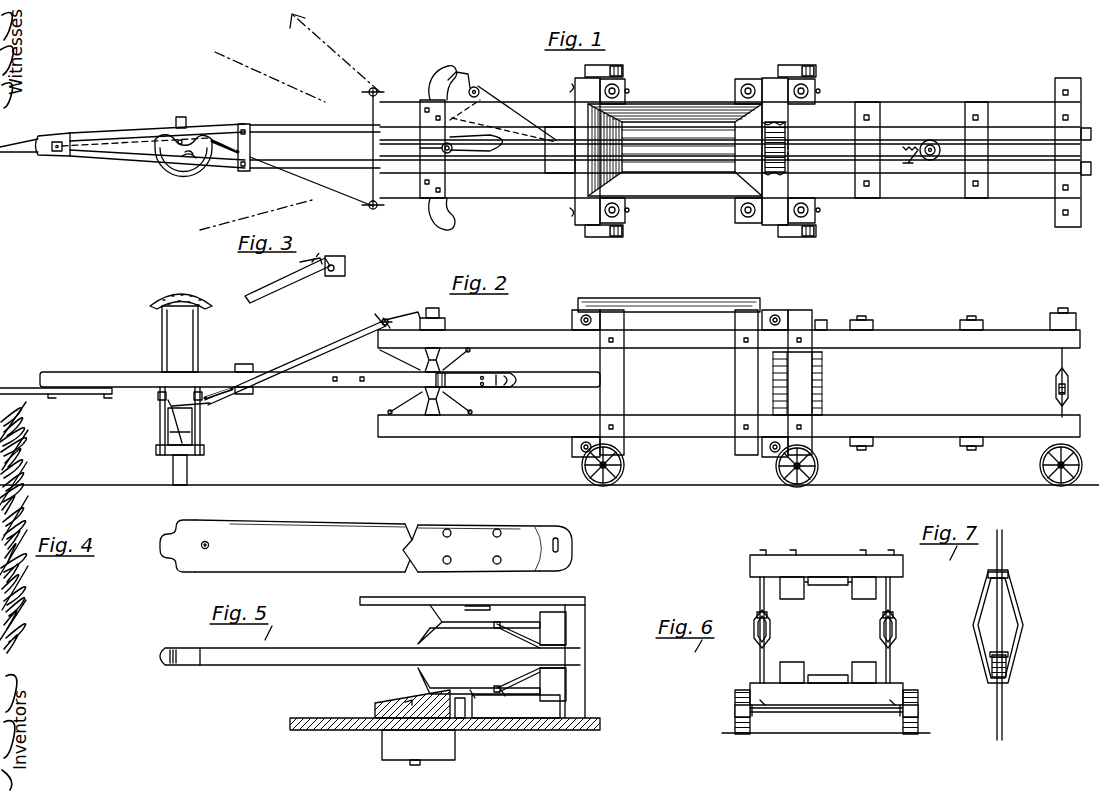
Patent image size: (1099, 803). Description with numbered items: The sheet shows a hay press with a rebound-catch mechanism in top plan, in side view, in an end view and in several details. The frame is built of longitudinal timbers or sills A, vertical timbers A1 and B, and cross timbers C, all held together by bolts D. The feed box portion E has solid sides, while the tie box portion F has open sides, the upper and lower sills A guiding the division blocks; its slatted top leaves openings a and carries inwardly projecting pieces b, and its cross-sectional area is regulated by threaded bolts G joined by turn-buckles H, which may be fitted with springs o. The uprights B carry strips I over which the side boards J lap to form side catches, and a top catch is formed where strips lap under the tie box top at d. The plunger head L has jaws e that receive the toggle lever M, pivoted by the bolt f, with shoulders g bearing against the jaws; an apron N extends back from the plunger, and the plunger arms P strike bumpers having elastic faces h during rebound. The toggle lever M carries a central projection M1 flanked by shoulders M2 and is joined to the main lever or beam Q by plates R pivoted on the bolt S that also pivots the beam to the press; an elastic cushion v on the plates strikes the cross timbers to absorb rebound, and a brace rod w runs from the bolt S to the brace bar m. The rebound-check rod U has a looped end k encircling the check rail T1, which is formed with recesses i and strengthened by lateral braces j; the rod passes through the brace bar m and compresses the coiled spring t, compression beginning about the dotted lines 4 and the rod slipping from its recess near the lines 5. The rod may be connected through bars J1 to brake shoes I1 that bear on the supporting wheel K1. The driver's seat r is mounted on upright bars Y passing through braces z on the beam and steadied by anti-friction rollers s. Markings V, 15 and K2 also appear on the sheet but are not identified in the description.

In FIG. 1, the direction arrow line 15 is at (335, 53).
In FIG. 1, the dotted lines 4 is at (262, 141).
In FIG. 3, the lines 5 is at (312, 258).
In FIG. 1, the main lever Q is at (334, 124).
In FIG. 1, the seat r is at (178, 170).
In FIG. 2, the seat r is at (182, 292).
In FIG. 1, the coiled spring t is at (224, 160).
In FIG. 2, the coiled spring t is at (218, 392).
In FIG. 1, the brace bar m is at (243, 172).
In FIG. 2, the brace bar m is at (254, 392).
In FIG. 1, the brace rod V is at (318, 176).
In FIG. 1, the elastic cushion v is at (461, 149).
In FIG. 1, the recesses i is at (376, 90).
In FIG. 3, the recesses i is at (345, 265).
In FIG. 1, the lateral braces j is at (386, 92).
In FIG. 2, the lateral braces j is at (392, 326).
In FIG. 1, the check rail T1 is at (356, 91).
In FIG. 3, the check rail T1 is at (328, 262).
In FIG. 1, the longitudinal timbers A is at (730, 150).
In FIG. 2, the longitudinal timbers A is at (729, 383).
In FIG. 6, the longitudinal timbers A is at (791, 597).
In FIG. 1, the vertical timbers A1 is at (878, 134).
In FIG. 2, the vertical timbers A1 is at (855, 318).
In FIG. 1, the bolt S is at (432, 149).
In FIG. 1, the central projection M1 is at (458, 70).
In FIG. 1, the shoulder M2 is at (478, 86).
In FIG. 1, the plates R is at (508, 92).
In FIG. 2, the plates R is at (476, 369).
In FIG. 1, the toggle lever M is at (550, 125).
In FIG. 4, the toggle lever M is at (366, 546).
In FIG. 5, the toggle lever M is at (370, 655).
In FIG. 1, the cross timbers C is at (1055, 117).
In FIG. 2, the cross timbers C is at (1050, 318).
In FIG. 6, the cross timbers C is at (826, 633).
In FIG. 1, the vertical timbers B is at (618, 78).
In FIG. 2, the vertical timbers B is at (706, 382).
In FIG. 1, the plunger head L is at (628, 140).
In FIG. 1, the feed box portion E is at (706, 98).
In FIG. 2, the feed box portion E is at (664, 330).
In FIG. 1, the turn-buckles H is at (765, 142).
In FIG. 2, the turn-buckles H is at (1055, 388).
In FIG. 7, the turn-buckles H is at (998, 626).
In FIG. 1, the top catch point d is at (790, 150).
In FIG. 1, the slots a is at (812, 151).
In FIG. 2, the slots a is at (290, 382).
In FIG. 6, the slots a is at (812, 586).
In FIG. 1, the bolts D is at (870, 114).
In FIG. 2, the bolts D is at (1068, 302).
In FIG. 2, the upright shafts Y is at (162, 356).
In FIG. 2, the bars J1 is at (160, 452).
In FIG. 2, the brake shoes I1 is at (180, 460).
In FIG. 2, the lever link K2 is at (170, 420).
In FIG. 2, the supporting wheel K1 is at (195, 434).
In FIG. 2, the braces z is at (208, 415).
In FIG. 2, the rebound check rod U is at (320, 352).
In FIG. 2, the anti-friction rollers s is at (432, 352).
In FIG. 2, the loop k is at (380, 316).
In FIG. 2, the brace rod w is at (402, 308).
In FIG. 2, the strips I is at (792, 383).
In FIG. 2, the side boards J is at (824, 382).
In FIG. 2, the tie box portion F is at (916, 388).
In FIG. 2, the inwardly projecting pieces b is at (916, 382).
In FIG. 2, the threaded bolts G is at (1064, 358).
In FIG. 6, the threaded bolts G is at (825, 630).
In FIG. 7, the threaded bolts G is at (1003, 560).
In FIG. 5, the apron N is at (472, 657).
In FIG. 5, the jaws e is at (466, 651).
In FIG. 5, the shoulders g is at (530, 656).
In FIG. 5, the bolt f is at (570, 648).
In FIG. 5, the elastic faces h is at (392, 706).
In FIG. 5, the springs o is at (460, 724).
In FIG. 7, the springs o is at (1010, 672).
In FIG. 5, the plunger arms P is at (516, 706).